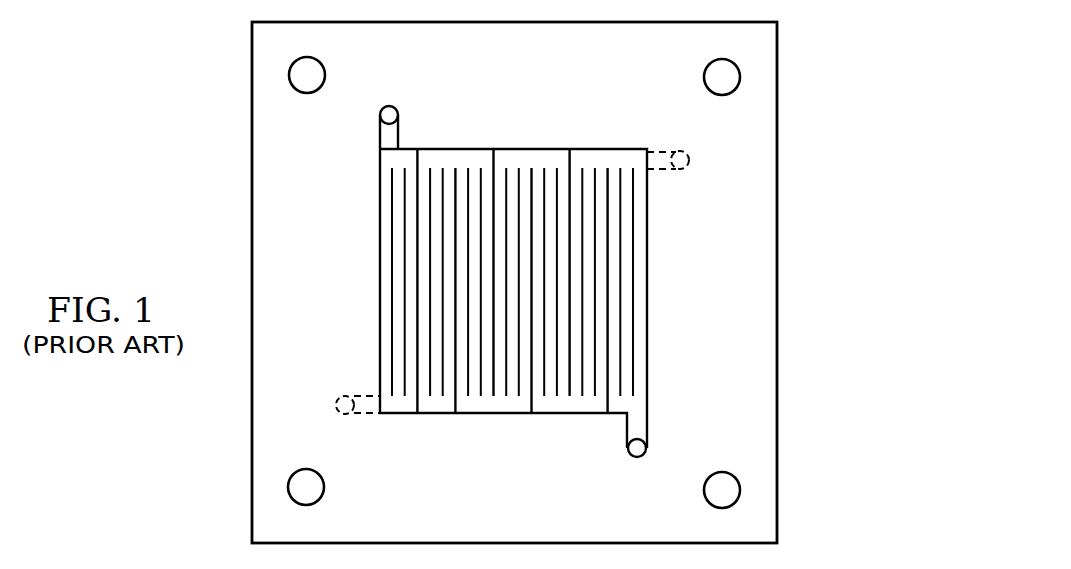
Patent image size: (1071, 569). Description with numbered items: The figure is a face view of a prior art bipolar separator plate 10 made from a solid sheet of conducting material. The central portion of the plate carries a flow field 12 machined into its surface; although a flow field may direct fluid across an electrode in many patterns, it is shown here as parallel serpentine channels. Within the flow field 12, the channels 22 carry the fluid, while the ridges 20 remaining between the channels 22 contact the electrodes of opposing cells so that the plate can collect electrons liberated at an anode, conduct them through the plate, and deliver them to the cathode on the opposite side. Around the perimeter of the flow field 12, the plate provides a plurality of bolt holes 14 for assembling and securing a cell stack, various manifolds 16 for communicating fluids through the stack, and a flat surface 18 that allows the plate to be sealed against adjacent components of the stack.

The bipolar separator plate 10 is at (193, 249).
The flow field 12 is at (660, 266).
The bolt holes 14 is at (288, 67).
The manifolds 16 is at (392, 102).
The flat surface 18 is at (288, 166).
The ridges 20 is at (443, 165).
The channels 22 is at (514, 162).